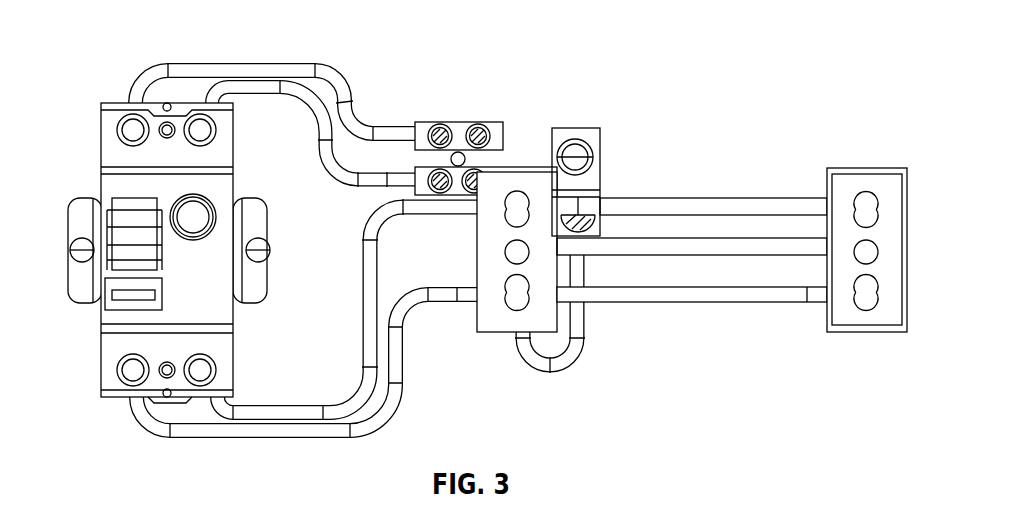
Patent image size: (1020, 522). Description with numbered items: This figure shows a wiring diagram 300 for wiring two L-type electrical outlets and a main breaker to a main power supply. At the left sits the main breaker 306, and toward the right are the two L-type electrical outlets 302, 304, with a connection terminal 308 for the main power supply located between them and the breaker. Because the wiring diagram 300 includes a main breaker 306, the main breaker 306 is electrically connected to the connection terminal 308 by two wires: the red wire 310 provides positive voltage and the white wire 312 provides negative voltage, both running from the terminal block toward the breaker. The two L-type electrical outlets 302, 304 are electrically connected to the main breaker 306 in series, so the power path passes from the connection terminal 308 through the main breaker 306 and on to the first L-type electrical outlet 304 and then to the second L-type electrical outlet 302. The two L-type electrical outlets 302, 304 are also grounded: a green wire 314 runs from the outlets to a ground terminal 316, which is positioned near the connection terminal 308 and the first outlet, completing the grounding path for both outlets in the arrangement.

The wiring diagram 300 is at (122, 52).
The L-type electrical outlet 302 is at (848, 188).
The L-type electrical outlet 304 is at (505, 182).
The main breaker 306 is at (176, 188).
The connection terminal 308 is at (452, 120).
The red wire 310 is at (351, 102).
The white wire 312 is at (336, 172).
The green wire 314 is at (669, 243).
The ground terminal 316 is at (581, 150).